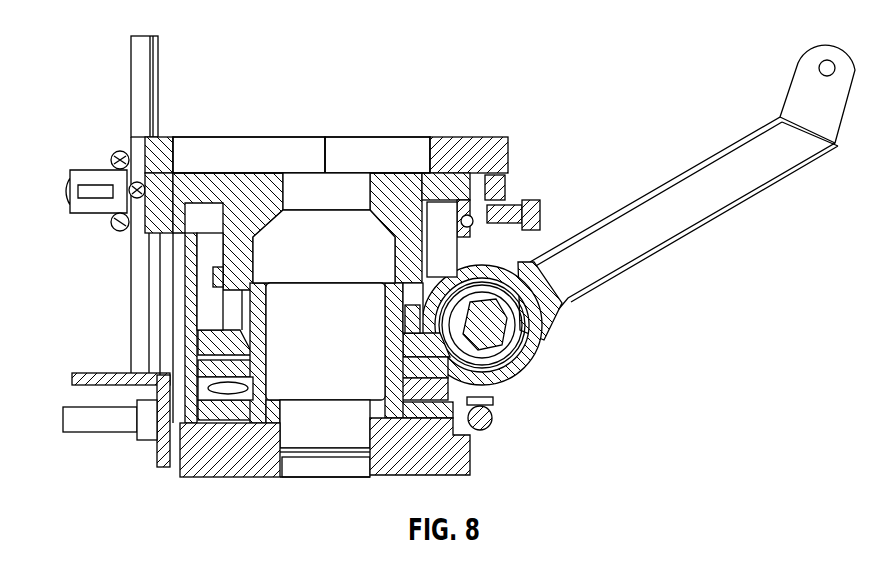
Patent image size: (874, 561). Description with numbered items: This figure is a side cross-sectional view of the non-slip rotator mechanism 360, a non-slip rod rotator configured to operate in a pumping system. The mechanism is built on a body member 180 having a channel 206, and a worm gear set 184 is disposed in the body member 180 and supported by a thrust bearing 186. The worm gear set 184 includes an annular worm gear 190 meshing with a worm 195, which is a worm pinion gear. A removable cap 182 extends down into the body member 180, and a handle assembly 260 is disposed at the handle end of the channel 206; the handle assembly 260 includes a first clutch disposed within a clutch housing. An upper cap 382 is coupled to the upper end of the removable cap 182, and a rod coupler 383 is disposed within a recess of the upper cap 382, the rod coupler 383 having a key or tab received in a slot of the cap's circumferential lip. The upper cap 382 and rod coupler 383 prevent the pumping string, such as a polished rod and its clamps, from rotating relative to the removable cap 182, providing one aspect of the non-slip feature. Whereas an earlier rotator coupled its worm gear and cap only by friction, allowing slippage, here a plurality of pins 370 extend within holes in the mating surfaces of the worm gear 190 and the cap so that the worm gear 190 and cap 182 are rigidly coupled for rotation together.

The non-slip rotator mechanism 360 is at (108, 34).
The handle assembly 260 is at (762, 28).
The removable cap 182 is at (228, 187).
The upper cap 382 is at (270, 155).
The rod coupler 383 is at (403, 155).
The pins 370 is at (233, 303).
The annular worm gear 190 is at (265, 355).
The worm gear set 184 is at (403, 358).
The thrust bearing 186 is at (218, 392).
The worm 195 is at (510, 287).
The channel 206 is at (513, 372).
The body member 180 is at (190, 460).